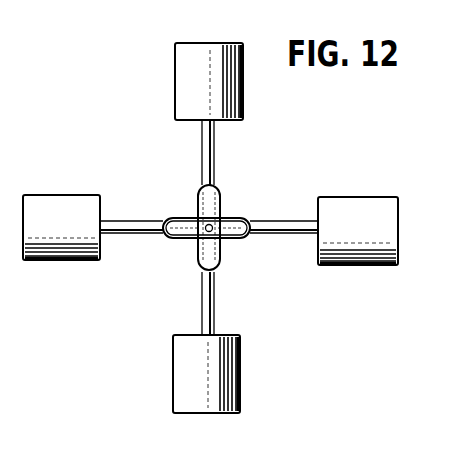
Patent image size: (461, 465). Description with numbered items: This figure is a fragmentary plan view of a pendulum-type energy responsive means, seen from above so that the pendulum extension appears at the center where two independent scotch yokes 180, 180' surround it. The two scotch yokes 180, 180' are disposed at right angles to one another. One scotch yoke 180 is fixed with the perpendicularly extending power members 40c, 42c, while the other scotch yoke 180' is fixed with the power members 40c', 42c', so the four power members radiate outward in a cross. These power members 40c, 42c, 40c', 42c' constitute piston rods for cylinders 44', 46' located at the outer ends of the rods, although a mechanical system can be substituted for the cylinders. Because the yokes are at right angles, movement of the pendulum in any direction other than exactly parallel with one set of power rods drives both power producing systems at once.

The cylinder 44' is at (133, 151).
The cylinder 46' is at (285, 287).
The power member 40c is at (189, 303).
The power member 40c' is at (131, 212).
The power member 42c is at (232, 152).
The power member 42c' is at (284, 211).
The scotch yoke 180 is at (190, 247).
The scotch yoke 180' is at (237, 233).